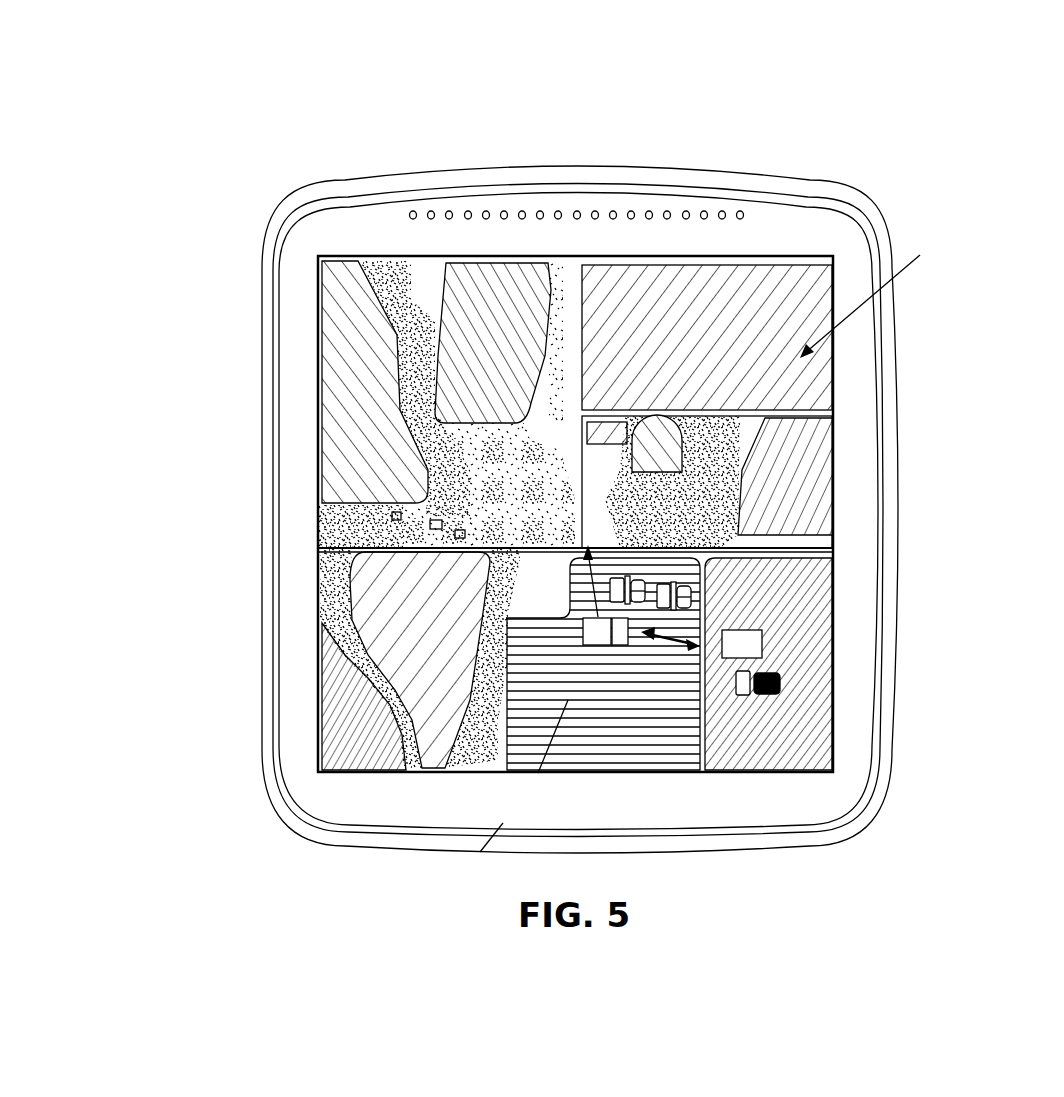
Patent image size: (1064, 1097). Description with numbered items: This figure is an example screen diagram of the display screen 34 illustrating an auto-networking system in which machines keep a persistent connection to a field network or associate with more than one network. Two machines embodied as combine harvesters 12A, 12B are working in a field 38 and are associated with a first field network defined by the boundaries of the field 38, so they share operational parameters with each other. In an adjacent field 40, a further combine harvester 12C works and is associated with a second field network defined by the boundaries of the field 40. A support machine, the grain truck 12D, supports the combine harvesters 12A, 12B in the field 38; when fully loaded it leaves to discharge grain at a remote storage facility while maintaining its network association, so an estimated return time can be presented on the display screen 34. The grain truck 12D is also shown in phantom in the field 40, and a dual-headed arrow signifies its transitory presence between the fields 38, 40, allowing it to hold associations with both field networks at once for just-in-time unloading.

The display screen 34 is at (160, 155).
The field 38 is at (603, 659).
The field 40 is at (768, 664).
The combine harvester 12A is at (678, 585).
The combine harvester 12B is at (627, 578).
The combine harvester 12C is at (778, 682).
The grain truck 12D is at (605, 645).